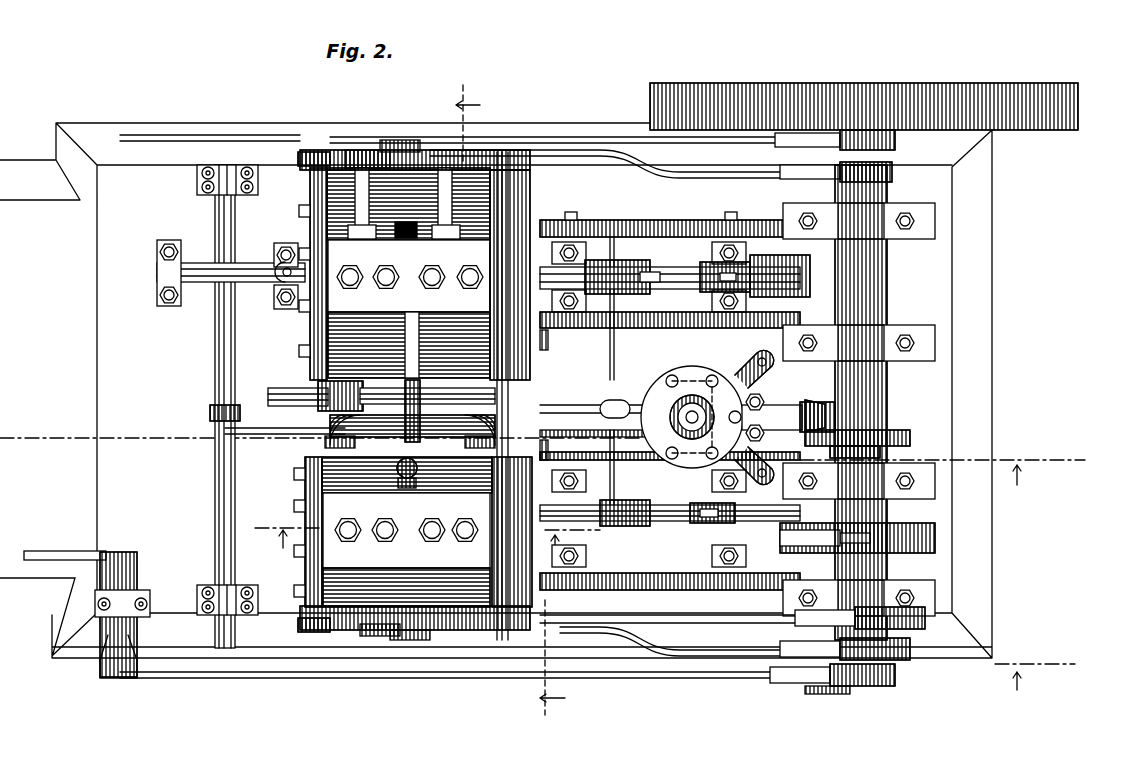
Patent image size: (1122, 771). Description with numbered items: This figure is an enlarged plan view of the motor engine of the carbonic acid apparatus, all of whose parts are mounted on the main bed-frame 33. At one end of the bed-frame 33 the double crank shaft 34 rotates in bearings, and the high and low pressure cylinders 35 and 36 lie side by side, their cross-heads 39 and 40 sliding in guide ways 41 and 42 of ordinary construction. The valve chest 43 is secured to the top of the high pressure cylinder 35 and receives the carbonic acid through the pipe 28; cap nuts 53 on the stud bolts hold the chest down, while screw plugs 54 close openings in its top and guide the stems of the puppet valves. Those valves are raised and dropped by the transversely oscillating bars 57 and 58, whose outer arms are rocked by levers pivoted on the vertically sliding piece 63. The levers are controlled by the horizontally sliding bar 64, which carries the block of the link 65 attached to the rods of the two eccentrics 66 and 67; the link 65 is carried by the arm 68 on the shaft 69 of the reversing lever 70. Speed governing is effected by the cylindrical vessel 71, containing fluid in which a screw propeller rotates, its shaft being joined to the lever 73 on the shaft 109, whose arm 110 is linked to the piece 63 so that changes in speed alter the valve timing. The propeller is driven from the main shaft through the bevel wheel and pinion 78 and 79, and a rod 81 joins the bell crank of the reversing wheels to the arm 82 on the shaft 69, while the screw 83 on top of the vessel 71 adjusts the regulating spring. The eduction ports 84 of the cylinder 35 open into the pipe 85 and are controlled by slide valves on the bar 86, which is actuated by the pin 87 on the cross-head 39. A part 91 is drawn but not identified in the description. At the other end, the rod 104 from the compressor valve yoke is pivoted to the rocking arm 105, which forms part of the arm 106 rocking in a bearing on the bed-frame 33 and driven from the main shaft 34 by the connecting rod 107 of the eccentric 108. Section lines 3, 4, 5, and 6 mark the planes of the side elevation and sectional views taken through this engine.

The section line 3 is at (1035, 674).
The section line 4 is at (953, 467).
The section line 5 is at (417, 535).
The section line 6 is at (510, 407).
The pipe 28 is at (420, 478).
The main bed-frame 33 is at (539, 370).
The double crank shaft 34 is at (888, 392).
The high pressure cylinder 35 is at (308, 500).
The low pressure cylinder 36 is at (312, 220).
The cross-head 39 is at (688, 520).
The cross-head 40 is at (628, 300).
The guide way 41 is at (600, 515).
The guide way 42 is at (680, 300).
The valve chest 43 is at (428, 528).
The cap nuts 53 is at (427, 532).
The screw plugs 54 is at (450, 510).
The bar 57 is at (445, 575).
The bar 58 is at (382, 575).
The sliding piece 63 is at (350, 683).
The horizontally sliding bar 64 is at (315, 152).
The link 65 is at (385, 148).
The eccentric 66 is at (905, 178).
The eccentric 67 is at (895, 140).
The arm 68 is at (275, 137).
The shaft 69 is at (222, 500).
The reversing lever 70 is at (275, 280).
The cylindrical vessel 71 is at (738, 417).
The lever 73 is at (540, 418).
The bevel wheel 78 is at (895, 430).
The pinion 79 is at (814, 400).
The rod 81 is at (259, 431).
The arm 82 is at (212, 410).
The screw 83 is at (712, 390).
The eduction ports 84 is at (338, 450).
The pipe 85 is at (335, 420).
The bar 86 is at (441, 405).
The pin 87 is at (580, 396).
The pipe 91 is at (283, 397).
The rod 104 is at (78, 553).
The rocking arm 105 is at (127, 566).
The arm 106 is at (130, 648).
The connecting rod 107 is at (627, 680).
The eccentric 108 is at (870, 690).
The shaft 109 is at (515, 200).
The arm 110 is at (470, 172).